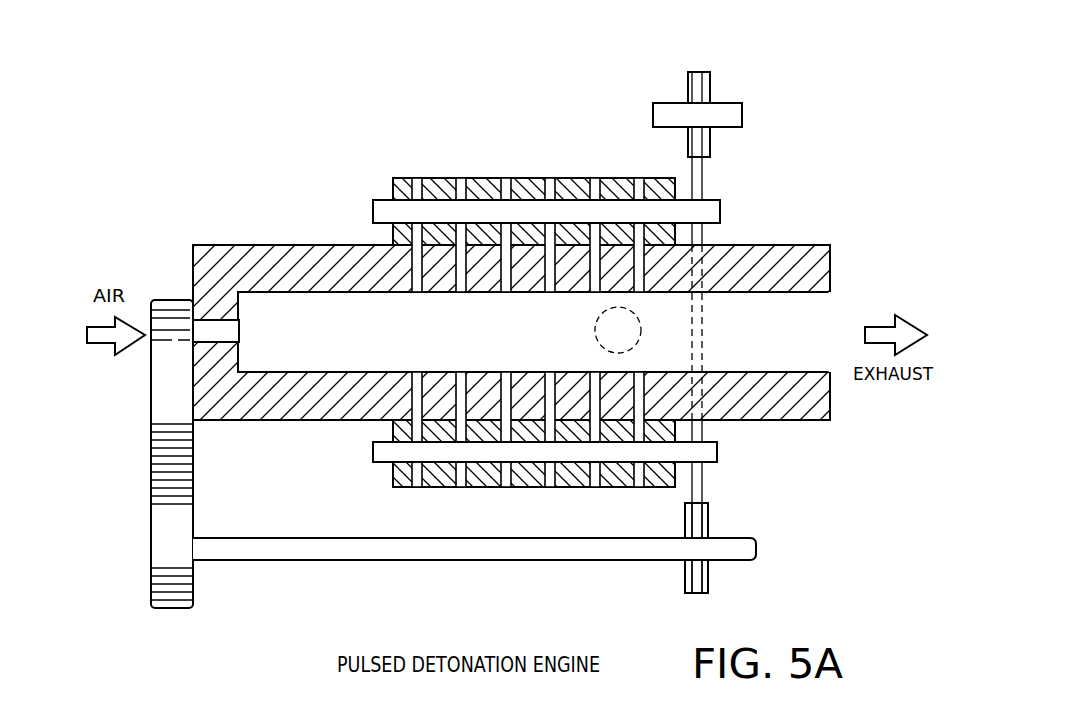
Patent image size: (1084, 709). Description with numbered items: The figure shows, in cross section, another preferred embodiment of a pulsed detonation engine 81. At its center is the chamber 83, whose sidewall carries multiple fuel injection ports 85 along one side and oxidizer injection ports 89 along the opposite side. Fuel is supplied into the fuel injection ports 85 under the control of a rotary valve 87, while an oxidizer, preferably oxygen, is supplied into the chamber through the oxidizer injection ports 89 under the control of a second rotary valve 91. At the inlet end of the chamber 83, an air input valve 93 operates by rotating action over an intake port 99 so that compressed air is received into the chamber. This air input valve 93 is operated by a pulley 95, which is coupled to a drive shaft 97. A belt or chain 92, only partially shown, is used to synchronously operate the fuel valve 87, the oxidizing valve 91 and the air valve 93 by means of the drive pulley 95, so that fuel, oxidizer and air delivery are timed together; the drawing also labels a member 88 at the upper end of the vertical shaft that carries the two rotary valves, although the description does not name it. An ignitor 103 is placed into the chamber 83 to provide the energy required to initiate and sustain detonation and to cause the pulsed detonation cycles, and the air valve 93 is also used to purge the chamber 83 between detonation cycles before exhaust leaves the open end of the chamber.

The pulsed detonation engine 81 is at (511, 415).
The chamber 83 is at (277, 260).
The fuel injection ports 85 is at (595, 232).
The rotary valve 87 is at (721, 212).
The vertical drive shaft 88 is at (688, 93).
The oxidizer injection ports 89 is at (395, 433).
The rotary valve 91 is at (717, 452).
The belt or chain 92 is at (704, 338).
The air input valve 93 is at (151, 413).
The pulley 95 is at (151, 560).
The drive shaft 97 is at (757, 548).
The intake port 99 is at (238, 337).
The ignitor 103 is at (596, 336).